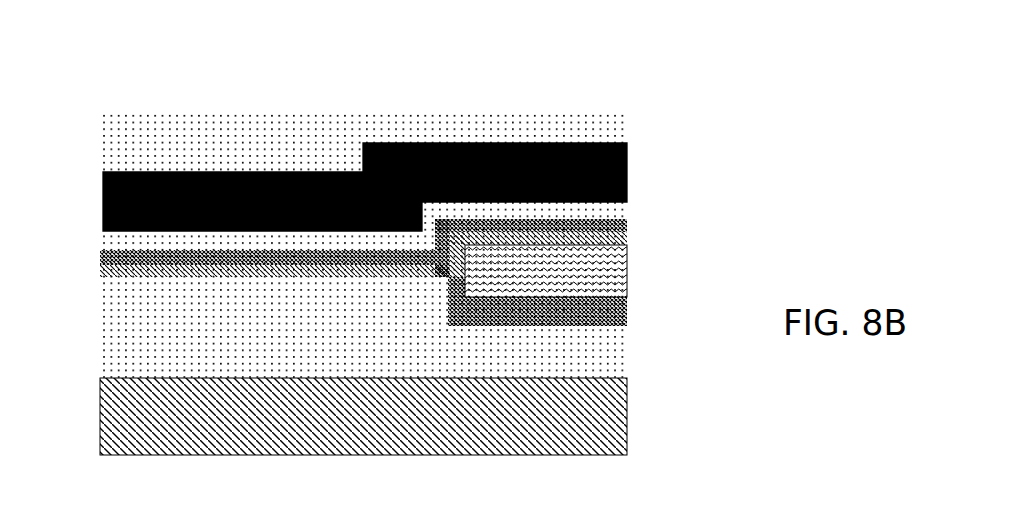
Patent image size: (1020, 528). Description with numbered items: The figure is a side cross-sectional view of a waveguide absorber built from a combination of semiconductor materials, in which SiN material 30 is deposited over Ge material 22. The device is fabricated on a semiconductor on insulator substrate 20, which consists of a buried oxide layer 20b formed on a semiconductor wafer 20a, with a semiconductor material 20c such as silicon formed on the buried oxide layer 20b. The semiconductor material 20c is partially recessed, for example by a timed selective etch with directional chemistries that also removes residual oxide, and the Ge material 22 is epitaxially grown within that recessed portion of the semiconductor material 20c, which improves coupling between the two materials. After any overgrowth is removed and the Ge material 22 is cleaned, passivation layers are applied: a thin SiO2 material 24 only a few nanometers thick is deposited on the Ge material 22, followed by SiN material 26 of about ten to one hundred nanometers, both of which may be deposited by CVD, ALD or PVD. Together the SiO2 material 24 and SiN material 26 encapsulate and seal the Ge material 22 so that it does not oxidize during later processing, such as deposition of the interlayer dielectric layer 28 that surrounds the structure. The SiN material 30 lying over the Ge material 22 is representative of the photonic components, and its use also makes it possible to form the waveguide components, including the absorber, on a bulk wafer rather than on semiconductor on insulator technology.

The semiconductor on insulator substrate 20 is at (328, 392).
The semiconductor wafer 20a is at (182, 433).
The buried oxide (BOX) layer 20b is at (305, 373).
The semiconductor material 20c is at (470, 327).
The Ge material 22 is at (573, 262).
The SiO2 material 24 is at (102, 268).
The SiN material 26 is at (103, 255).
The interlayer dielectric layer 28 is at (102, 163).
The SiN material 30 is at (521, 145).